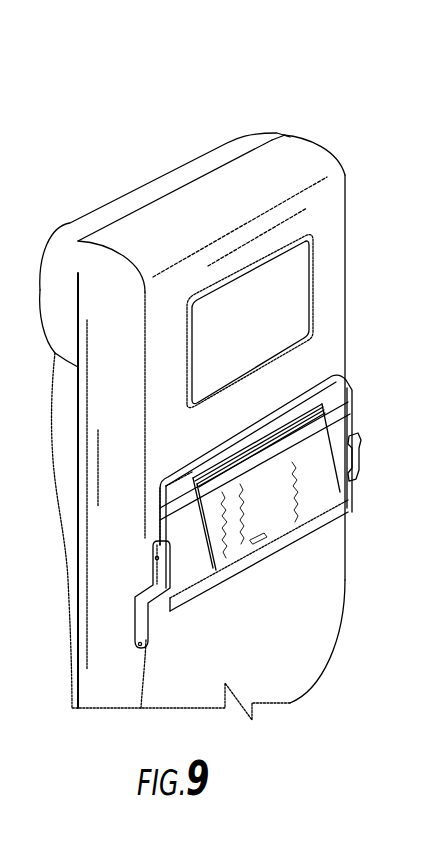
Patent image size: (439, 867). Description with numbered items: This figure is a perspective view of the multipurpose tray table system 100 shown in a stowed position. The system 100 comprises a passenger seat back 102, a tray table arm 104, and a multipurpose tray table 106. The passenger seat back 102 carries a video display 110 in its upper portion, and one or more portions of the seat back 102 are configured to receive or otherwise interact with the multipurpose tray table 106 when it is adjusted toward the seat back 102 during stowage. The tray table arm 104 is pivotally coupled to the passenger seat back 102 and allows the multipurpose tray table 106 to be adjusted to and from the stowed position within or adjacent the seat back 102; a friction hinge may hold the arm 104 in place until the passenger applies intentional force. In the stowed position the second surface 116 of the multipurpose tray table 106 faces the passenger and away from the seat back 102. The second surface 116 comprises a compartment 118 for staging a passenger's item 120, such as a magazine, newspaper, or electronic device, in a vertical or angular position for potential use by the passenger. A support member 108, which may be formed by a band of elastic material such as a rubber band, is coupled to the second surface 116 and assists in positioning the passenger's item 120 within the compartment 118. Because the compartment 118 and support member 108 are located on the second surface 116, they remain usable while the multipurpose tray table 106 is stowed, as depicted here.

The multipurpose tray table system 100 is at (203, 387).
The passenger seat back 102 is at (145, 403).
The tray table arm 104 is at (145, 627).
The multipurpose tray table 106 is at (160, 525).
The support member 108 is at (203, 500).
The video display 110 is at (313, 266).
The second surface 116 is at (187, 545).
The compartment 118 is at (215, 582).
The passenger's item 120 is at (277, 513).